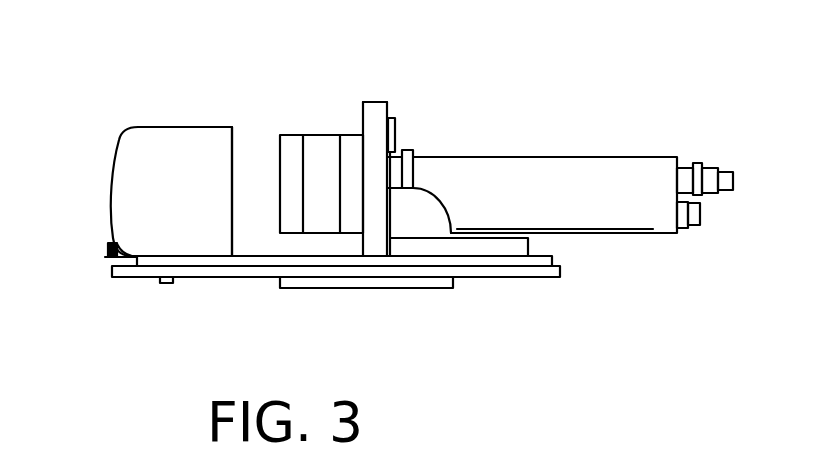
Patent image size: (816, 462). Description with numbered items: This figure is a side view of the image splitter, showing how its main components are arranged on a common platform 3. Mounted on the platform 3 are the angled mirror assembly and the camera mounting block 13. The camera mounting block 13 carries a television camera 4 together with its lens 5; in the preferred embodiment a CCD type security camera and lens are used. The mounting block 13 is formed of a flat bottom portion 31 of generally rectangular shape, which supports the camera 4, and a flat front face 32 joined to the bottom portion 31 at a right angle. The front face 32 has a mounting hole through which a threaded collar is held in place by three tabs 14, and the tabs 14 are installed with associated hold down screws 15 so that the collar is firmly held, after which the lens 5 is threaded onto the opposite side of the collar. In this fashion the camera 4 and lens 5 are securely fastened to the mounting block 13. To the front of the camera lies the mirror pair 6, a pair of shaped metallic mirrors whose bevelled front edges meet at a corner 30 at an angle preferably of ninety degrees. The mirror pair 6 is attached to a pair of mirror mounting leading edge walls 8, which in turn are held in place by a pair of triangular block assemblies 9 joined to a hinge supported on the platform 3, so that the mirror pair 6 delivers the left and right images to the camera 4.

The platform 3 is at (487, 277).
The television camera 4 is at (578, 223).
The lens 5 is at (322, 215).
The mirror pair 6 is at (182, 243).
The mirror mounting leading edge walls 8 is at (110, 245).
The triangular block assemblies 9 is at (108, 258).
The camera mounting block 13 is at (370, 248).
The tabs 14 is at (395, 118).
The hold down screws 15 is at (362, 118).
The corner 30 is at (235, 198).
The bottom portion 31 is at (508, 243).
The front face 32 is at (385, 102).